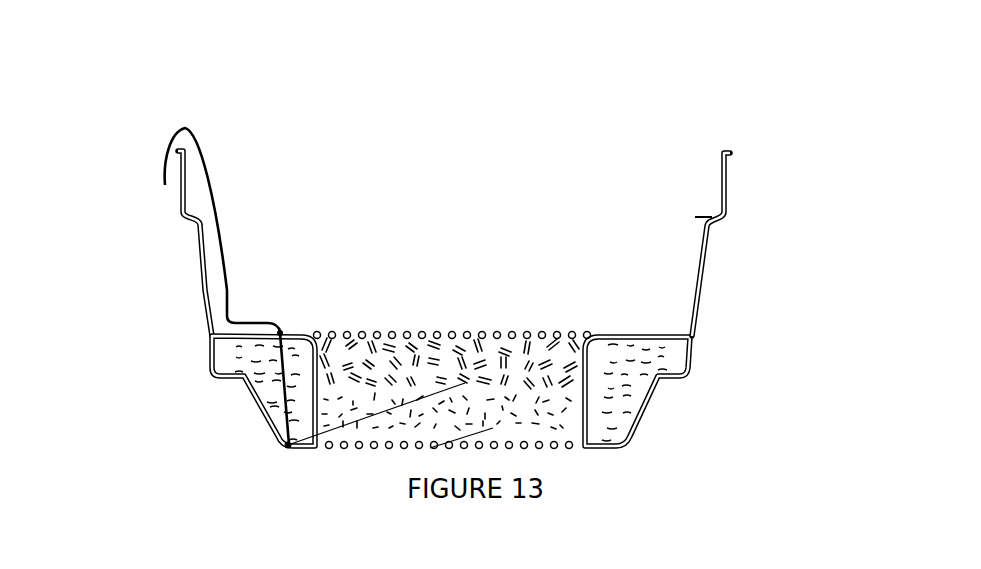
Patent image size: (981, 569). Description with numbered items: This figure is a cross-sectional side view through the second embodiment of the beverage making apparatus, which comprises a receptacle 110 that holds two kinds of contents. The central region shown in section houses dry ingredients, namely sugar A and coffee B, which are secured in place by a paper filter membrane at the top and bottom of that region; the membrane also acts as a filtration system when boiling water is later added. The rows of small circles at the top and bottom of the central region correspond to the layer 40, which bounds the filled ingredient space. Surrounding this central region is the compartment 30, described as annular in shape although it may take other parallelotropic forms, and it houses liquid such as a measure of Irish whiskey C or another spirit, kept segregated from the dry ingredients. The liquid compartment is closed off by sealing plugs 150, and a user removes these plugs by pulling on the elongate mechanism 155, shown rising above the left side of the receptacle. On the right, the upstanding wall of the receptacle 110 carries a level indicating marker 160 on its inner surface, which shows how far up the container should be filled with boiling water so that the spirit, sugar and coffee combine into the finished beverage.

The compartment 30 is at (580, 363).
The apertured layer 40 is at (425, 328).
The receptacle 110 is at (728, 199).
The sealing plugs 150 is at (281, 333).
The elongate mechanism 155 is at (164, 182).
The level indicating marker 160 is at (702, 212).
The sugar A is at (288, 445).
The coffee B is at (430, 448).
The Irish whiskey C is at (210, 366).